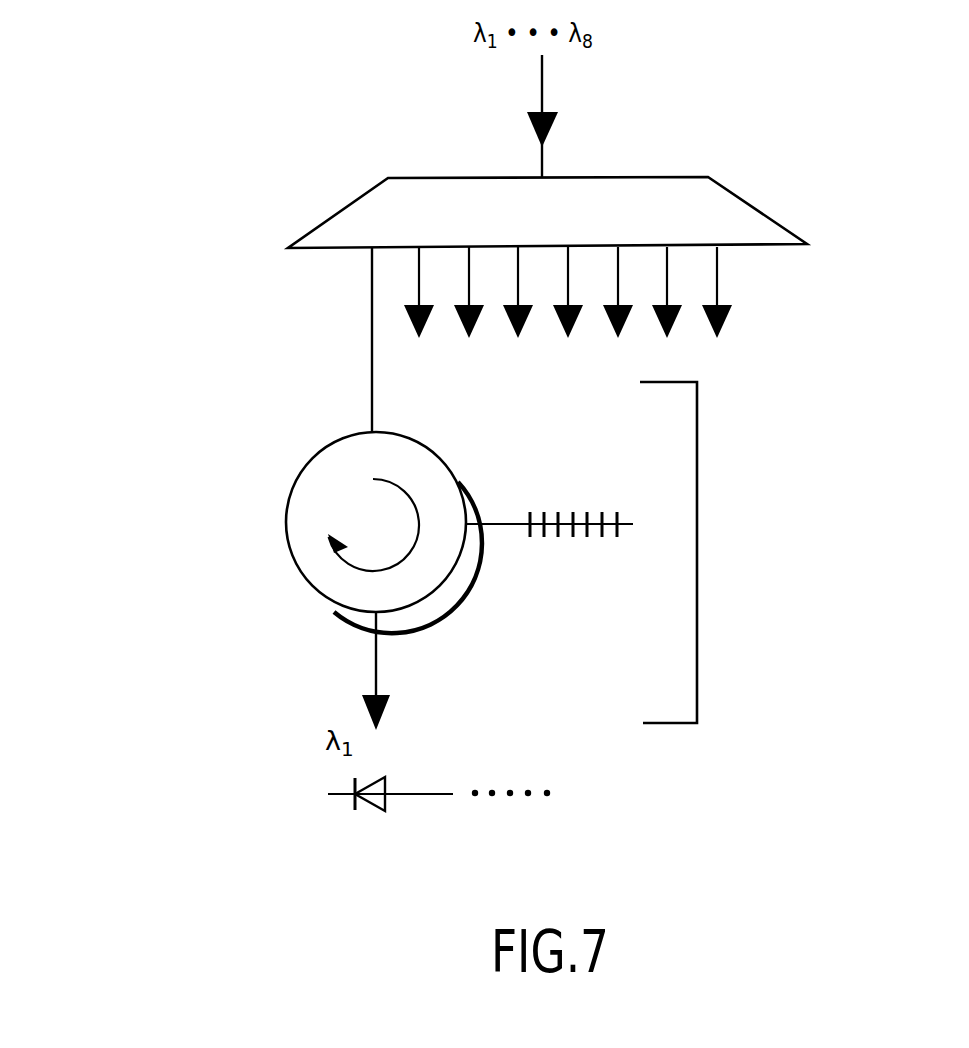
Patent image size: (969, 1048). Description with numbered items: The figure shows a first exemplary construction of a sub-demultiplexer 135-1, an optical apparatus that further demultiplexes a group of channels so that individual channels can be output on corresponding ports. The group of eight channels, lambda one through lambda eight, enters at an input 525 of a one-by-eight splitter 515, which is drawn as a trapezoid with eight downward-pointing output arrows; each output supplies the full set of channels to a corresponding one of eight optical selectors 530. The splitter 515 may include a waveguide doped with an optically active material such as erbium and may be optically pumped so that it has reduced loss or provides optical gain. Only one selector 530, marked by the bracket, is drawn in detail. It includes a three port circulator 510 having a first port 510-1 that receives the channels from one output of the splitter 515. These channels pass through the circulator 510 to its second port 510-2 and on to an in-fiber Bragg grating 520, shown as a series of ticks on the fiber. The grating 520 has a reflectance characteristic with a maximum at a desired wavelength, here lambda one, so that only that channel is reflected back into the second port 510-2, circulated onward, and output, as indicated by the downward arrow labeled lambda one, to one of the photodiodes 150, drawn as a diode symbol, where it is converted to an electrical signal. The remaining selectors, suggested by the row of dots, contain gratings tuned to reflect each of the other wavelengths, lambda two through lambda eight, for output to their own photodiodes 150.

The sub-demultiplexer 135-1 is at (244, 612).
The photodiode 150 is at (333, 809).
The three port circulator 510 is at (298, 473).
The first port 510-1 is at (373, 432).
The second port 510-2 is at (468, 527).
The 1×8 splitter 515 is at (370, 213).
The in-fiber Bragg grating 520 is at (568, 542).
The input 525 is at (542, 82).
The optical selector 530 is at (697, 562).